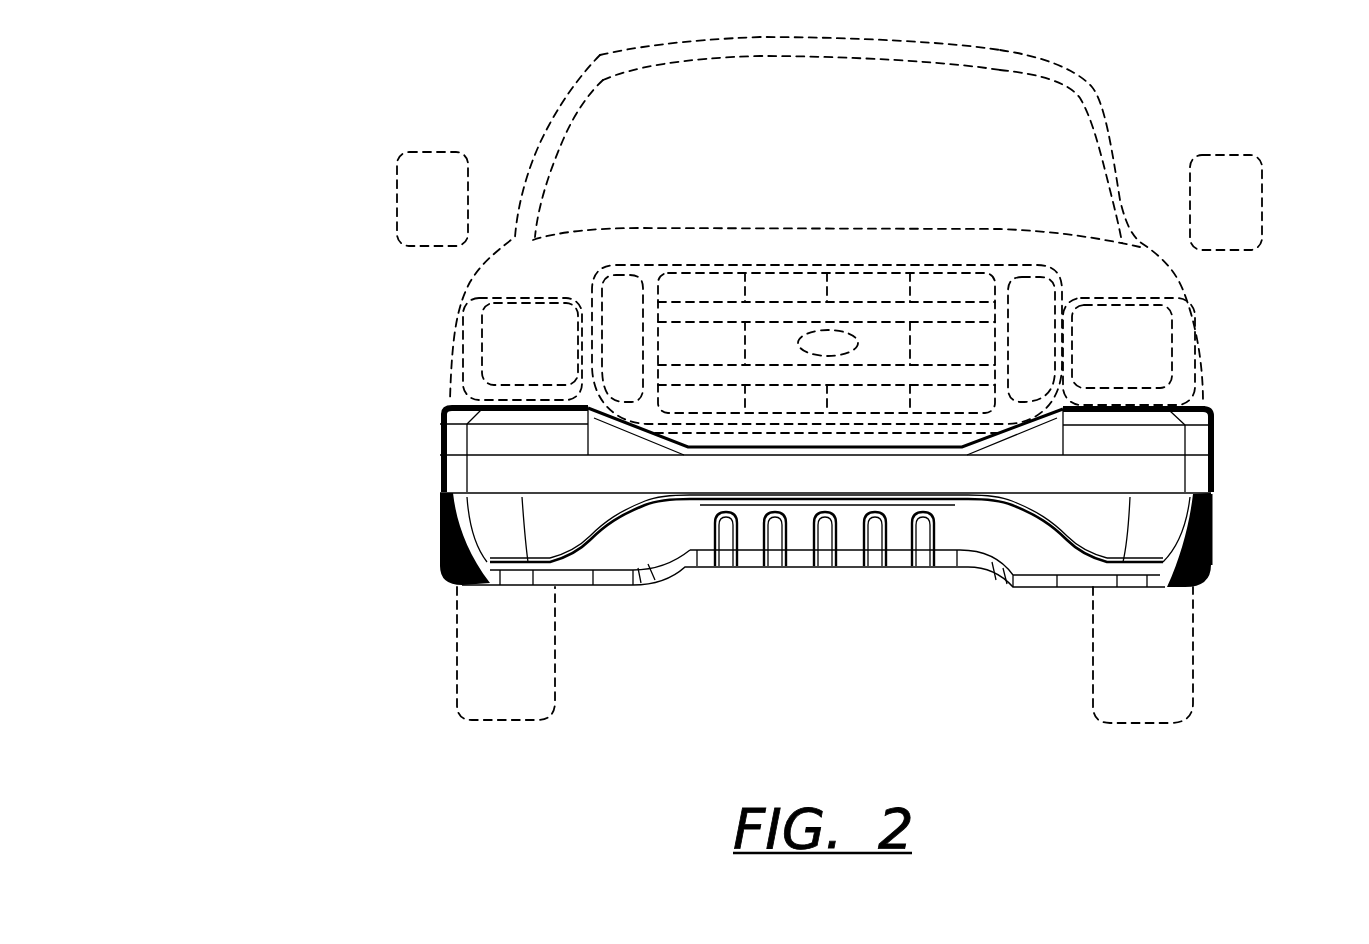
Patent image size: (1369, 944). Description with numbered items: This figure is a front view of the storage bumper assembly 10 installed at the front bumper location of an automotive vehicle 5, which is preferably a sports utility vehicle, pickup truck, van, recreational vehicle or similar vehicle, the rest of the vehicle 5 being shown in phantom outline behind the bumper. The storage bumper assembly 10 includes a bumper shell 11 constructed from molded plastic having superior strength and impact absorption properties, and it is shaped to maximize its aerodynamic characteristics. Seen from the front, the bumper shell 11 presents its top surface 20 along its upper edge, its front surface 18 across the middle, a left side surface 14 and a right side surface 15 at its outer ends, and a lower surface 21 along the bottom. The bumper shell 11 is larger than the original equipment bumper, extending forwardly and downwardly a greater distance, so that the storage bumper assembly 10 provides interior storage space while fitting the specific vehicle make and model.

The vehicle 5 is at (553, 113).
The storage bumper assembly 10 is at (742, 491).
The bumper shell 11 is at (425, 475).
The left side surface 14 is at (1213, 528).
The right side surface 15 is at (440, 525).
The front surface 18 is at (1090, 469).
The top surface 20 is at (1129, 408).
The lower surface 21 is at (782, 570).